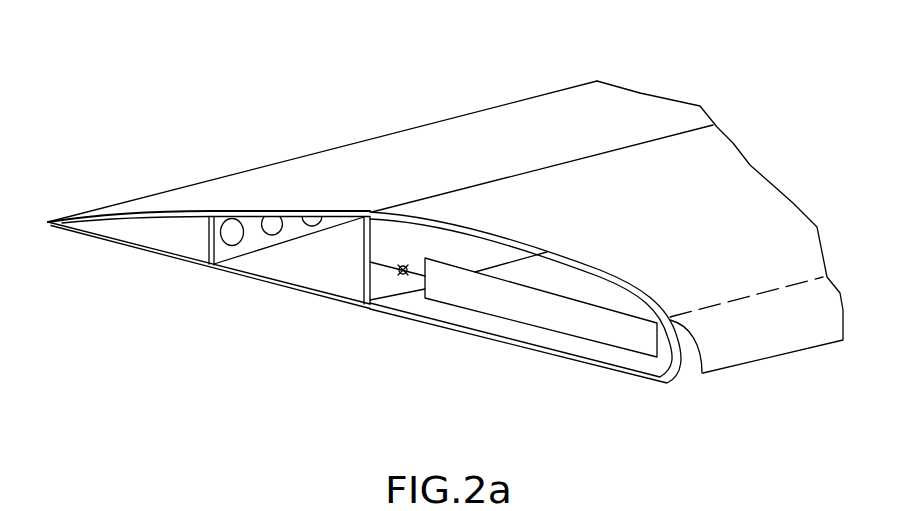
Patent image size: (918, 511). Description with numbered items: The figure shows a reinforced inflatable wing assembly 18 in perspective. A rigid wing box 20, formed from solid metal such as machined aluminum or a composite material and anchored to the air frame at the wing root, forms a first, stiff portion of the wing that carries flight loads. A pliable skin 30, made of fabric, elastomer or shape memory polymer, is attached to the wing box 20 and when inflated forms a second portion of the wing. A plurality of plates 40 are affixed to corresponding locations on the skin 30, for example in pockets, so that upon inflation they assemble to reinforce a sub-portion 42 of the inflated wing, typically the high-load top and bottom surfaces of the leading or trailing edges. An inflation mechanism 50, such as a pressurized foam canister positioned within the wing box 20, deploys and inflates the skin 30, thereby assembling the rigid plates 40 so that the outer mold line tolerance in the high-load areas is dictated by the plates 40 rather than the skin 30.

The wing assembly 18 is at (738, 141).
The wing box 20 is at (702, 373).
The skin 30 is at (258, 190).
The plates 40 is at (87, 218).
The sub-portion 42 is at (347, 334).
The inflation mechanism 50 is at (513, 320).